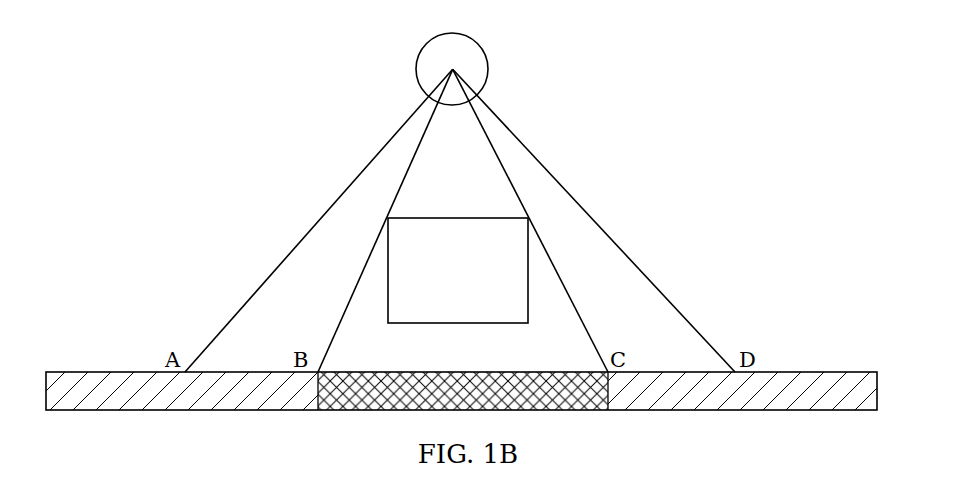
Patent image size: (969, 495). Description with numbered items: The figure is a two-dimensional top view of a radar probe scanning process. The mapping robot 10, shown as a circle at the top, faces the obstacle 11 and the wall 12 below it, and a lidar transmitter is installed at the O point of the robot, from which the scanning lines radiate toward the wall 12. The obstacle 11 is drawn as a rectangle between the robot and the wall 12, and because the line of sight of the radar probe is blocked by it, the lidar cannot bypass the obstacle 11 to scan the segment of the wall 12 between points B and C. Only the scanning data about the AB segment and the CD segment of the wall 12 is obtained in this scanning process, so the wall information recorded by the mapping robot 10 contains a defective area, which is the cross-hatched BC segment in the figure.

The mapping robot 10 is at (478, 43).
The obstacle 11 is at (528, 270).
The wall 12 is at (797, 372).